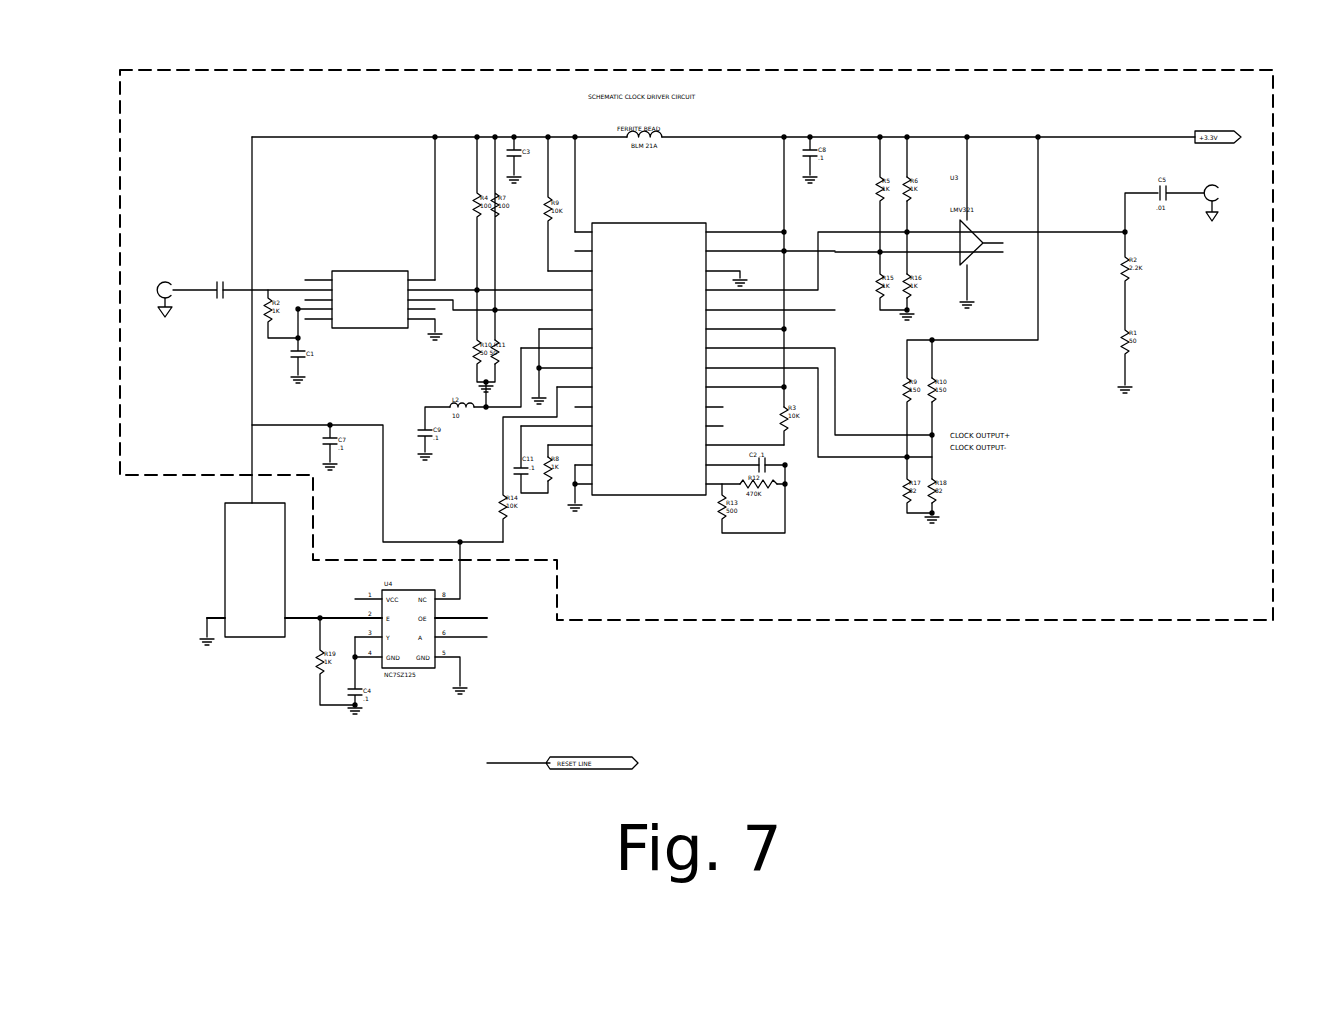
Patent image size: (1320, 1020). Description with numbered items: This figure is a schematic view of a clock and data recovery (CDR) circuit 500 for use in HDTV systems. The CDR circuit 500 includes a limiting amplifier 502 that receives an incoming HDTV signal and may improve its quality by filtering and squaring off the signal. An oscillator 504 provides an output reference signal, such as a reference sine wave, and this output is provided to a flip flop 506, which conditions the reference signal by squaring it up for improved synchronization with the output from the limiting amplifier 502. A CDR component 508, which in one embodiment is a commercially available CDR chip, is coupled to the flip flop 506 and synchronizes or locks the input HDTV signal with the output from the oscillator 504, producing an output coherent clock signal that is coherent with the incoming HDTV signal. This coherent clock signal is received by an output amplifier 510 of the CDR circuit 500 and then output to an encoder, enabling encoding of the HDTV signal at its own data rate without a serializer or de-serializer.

The clock and data recovery (CDR) circuit 500 is at (1103, 43).
The limiting amplifier 502 is at (163, 277).
The oscillator 504 is at (225, 570).
The flip flop 506 is at (377, 268).
The CDR component 508 is at (663, 221).
The output amplifier 510 is at (1222, 186).